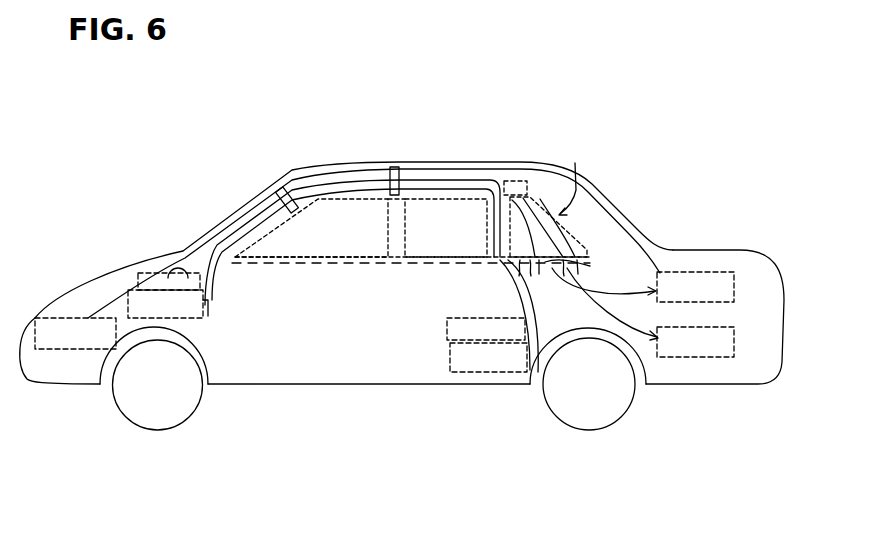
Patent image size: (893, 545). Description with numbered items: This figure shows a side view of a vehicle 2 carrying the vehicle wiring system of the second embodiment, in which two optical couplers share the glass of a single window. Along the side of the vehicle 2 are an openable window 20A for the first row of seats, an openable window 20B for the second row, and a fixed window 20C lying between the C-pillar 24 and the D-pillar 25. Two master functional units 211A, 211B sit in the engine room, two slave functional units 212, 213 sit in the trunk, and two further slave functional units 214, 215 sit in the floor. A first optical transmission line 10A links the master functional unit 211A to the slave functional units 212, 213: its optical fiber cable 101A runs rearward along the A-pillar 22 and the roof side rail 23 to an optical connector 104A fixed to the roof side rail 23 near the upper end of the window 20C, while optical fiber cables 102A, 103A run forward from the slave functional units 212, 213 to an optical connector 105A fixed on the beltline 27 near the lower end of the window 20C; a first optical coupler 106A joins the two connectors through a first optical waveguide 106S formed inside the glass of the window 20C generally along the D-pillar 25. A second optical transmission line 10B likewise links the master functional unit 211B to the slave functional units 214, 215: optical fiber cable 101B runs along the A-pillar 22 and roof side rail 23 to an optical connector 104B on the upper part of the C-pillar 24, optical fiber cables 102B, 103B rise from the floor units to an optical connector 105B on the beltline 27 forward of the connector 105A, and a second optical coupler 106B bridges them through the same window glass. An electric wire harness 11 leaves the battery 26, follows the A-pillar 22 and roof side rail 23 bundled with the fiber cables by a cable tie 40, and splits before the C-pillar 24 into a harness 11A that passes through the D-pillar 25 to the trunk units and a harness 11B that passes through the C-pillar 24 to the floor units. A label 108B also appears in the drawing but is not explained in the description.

The vehicle 2 is at (150, 238).
The electric wire harness 11 is at (203, 233).
The first optical transmission line 10A is at (229, 236).
The second optical transmission line 10B is at (252, 231).
The A-pillar 22 is at (288, 180).
The optical fiber cable 101A is at (316, 180).
The optical fiber cable 101B is at (353, 189).
The cable tie 40 is at (395, 165).
The roof side rail 23 is at (411, 162).
The C-pillar 24 is at (490, 187).
The electric wire harness 11B is at (491, 188).
The optical connector 104B is at (507, 181).
The optical connector 104A is at (519, 181).
The electric wire harness 11A is at (540, 168).
The second optical coupler 106B is at (569, 170).
The first optical coupler 106A is at (575, 186).
The first optical waveguide 106S is at (588, 174).
The D-pillar 25 is at (610, 191).
The slave functional unit 212 is at (736, 276).
The slave functional unit 213 is at (736, 331).
The optical connector 105A is at (592, 264).
The optical fiber cable 102A is at (594, 293).
The optical fiber cable 103A is at (598, 321).
The optical fiber cable 103B is at (540, 319).
The optical connector 105B is at (524, 297).
The optical fiber cable 102B is at (521, 303).
The window 20A is at (325, 262).
The window 20B is at (434, 262).
The window 20C is at (506, 258).
The beltline 27 is at (393, 262).
The slave functional unit 214 is at (450, 347).
The slave functional unit 215 is at (452, 367).
The master functional unit 211A is at (218, 283).
The master functional unit 211B is at (208, 318).
The battery 26 is at (72, 349).
The wire 108B is at (521, 228).